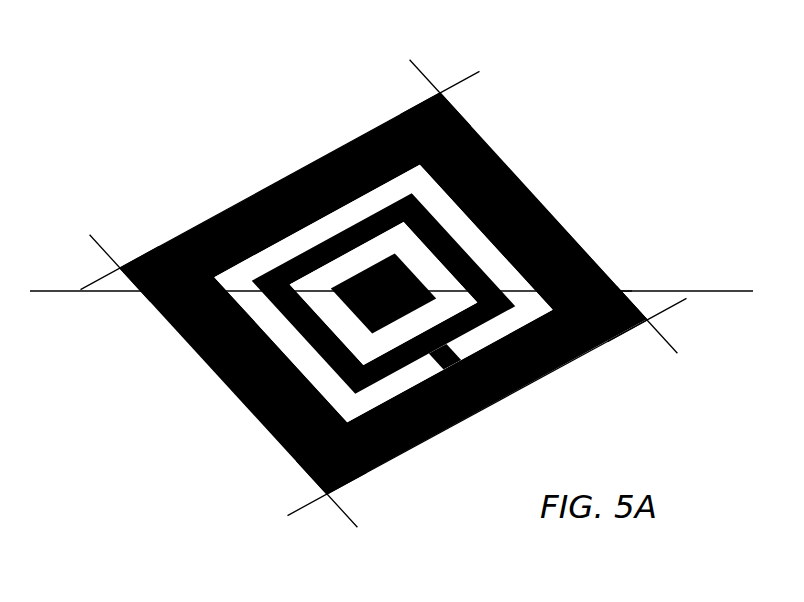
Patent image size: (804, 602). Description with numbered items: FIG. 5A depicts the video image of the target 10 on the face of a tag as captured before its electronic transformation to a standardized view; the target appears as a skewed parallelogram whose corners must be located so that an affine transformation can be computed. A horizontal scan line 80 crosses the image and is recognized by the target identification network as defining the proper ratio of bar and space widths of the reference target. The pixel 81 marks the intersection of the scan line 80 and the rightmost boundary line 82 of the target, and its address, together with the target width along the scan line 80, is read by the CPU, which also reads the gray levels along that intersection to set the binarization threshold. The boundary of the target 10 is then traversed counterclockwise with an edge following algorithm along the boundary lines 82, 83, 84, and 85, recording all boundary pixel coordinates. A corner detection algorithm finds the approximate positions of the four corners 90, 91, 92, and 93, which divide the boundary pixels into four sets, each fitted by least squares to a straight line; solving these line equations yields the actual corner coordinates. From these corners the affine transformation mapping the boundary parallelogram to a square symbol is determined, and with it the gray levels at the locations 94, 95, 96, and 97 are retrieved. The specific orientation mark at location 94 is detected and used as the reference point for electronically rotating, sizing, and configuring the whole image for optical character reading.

The target 10 is at (391, 297).
The horizontal scan line 80 is at (51, 291).
The pixel 81 is at (622, 291).
The rightmost boundary line 82 is at (572, 237).
The boundary line 83 is at (268, 185).
The boundary line 84 is at (228, 393).
The boundary line 85 is at (546, 387).
The corner 90 is at (650, 323).
The corner 91 is at (440, 93).
The corner 92 is at (120, 264).
The corner 93 is at (327, 496).
The location of orientation mark 94 is at (445, 357).
The location 95 is at (383, 293).
The location 96 is at (384, 293).
The location 97 is at (384, 293).